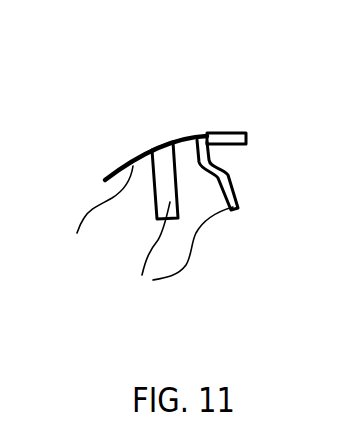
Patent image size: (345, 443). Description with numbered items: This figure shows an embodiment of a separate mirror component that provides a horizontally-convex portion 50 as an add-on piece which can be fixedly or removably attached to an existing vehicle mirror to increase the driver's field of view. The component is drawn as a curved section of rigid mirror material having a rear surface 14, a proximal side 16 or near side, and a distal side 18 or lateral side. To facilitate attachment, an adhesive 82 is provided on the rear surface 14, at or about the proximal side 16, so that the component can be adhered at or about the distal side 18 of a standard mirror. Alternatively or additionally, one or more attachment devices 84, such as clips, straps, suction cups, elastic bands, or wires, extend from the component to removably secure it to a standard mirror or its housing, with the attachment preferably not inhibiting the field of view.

The rear surface 14 is at (100, 217).
The proximal side 16 is at (250, 99).
The distal side 18 is at (81, 159).
The horizontally-convex portion 50 is at (173, 126).
The adhesive 82 is at (233, 144).
The attachment devices 84 is at (181, 260).